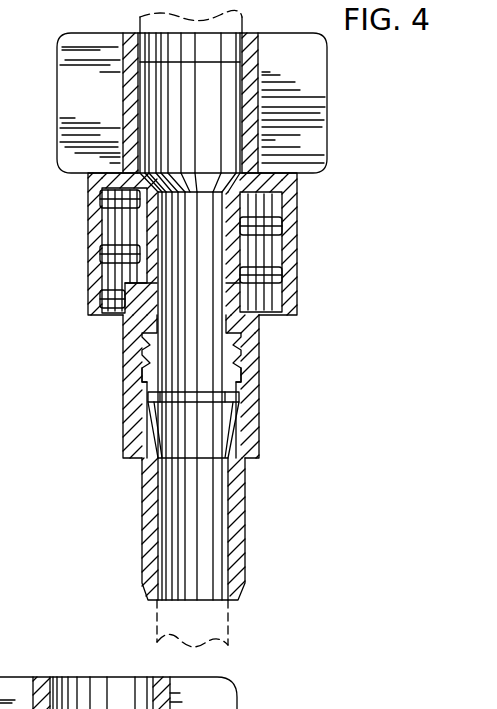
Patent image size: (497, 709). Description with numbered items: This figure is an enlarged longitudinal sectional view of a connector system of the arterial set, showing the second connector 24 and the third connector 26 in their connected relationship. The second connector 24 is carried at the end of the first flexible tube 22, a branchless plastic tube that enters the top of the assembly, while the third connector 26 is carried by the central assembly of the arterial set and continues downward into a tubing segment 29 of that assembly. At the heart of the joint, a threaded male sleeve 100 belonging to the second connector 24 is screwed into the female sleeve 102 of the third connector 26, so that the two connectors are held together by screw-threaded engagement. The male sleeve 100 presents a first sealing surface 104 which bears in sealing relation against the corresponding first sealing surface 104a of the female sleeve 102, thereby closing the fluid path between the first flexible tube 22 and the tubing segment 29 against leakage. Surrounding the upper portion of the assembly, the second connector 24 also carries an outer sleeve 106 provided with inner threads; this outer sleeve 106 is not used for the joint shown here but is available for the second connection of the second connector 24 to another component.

The first flexible tube 22 is at (244, 28).
The second connector 24 is at (331, 130).
The third connector 26 is at (250, 518).
The tubing segment 29 is at (232, 633).
The threaded male sleeve 100 is at (219, 338).
The female sleeve 102 is at (250, 410).
The first sealing surface 104 is at (142, 366).
The first sealing surface 104a is at (141, 360).
The outer sleeve 106 is at (283, 266).